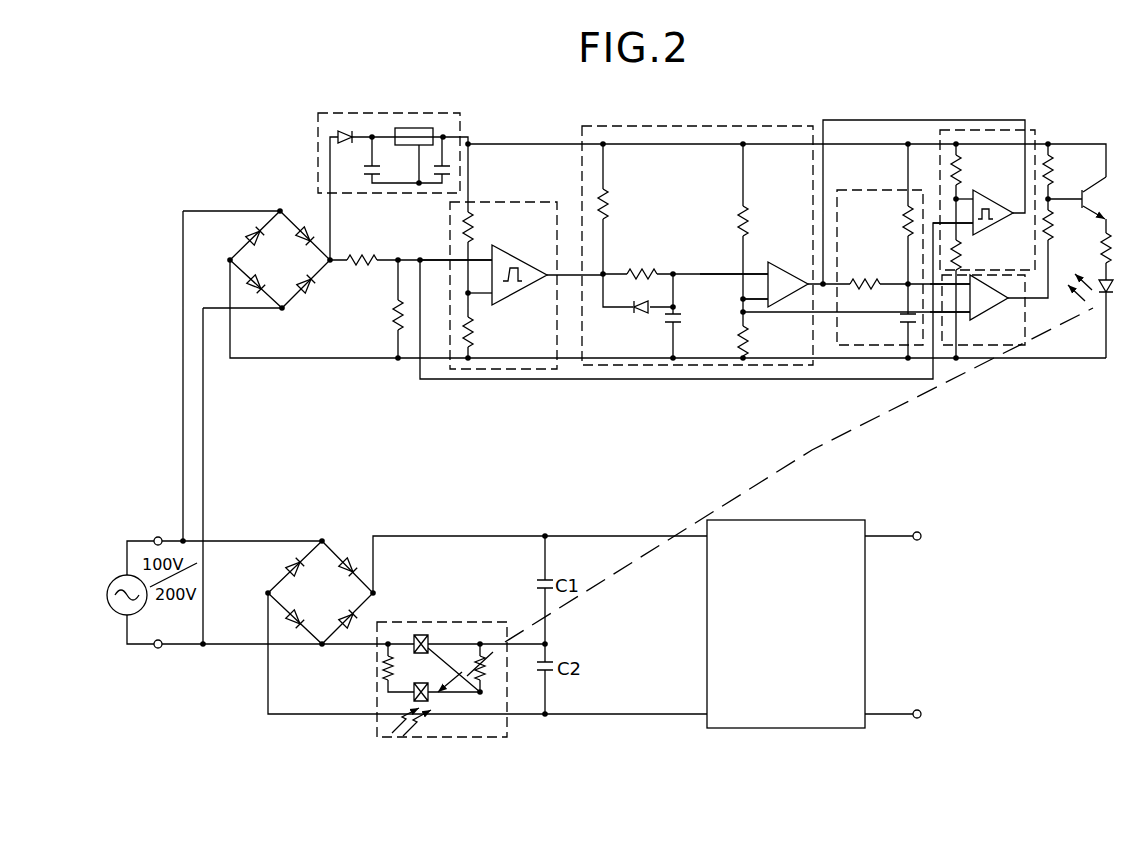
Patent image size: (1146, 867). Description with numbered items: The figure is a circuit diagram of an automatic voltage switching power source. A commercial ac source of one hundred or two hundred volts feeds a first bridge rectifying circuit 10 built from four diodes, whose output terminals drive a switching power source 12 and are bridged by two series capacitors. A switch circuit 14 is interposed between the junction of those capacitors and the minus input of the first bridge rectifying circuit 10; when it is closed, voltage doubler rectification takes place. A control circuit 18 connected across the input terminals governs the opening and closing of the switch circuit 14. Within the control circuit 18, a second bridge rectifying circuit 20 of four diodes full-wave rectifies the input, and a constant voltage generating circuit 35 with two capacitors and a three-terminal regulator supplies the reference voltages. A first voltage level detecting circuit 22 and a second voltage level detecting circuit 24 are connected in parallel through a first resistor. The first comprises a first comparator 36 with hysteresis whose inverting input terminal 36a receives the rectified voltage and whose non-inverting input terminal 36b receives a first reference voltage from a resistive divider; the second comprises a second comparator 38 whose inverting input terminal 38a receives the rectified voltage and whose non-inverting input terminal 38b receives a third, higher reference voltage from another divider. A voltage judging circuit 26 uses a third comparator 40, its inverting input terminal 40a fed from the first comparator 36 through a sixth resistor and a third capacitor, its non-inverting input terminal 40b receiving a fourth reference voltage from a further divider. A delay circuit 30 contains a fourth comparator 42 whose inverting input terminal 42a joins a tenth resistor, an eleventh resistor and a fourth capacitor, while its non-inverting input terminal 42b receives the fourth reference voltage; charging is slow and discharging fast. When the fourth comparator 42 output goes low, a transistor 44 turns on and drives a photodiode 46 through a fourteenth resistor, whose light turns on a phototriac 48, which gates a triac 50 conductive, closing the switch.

The first bridge rectifying circuit 10 is at (327, 538).
The switching power source 12 is at (780, 533).
The switch circuit 14 is at (447, 618).
The control circuit 18 is at (380, 380).
The second bridge rectifying circuit 20 is at (279, 207).
The first voltage level detecting circuit 22 is at (499, 199).
The second voltage level detecting circuit 24 is at (988, 128).
The voltage judging circuit 26 is at (711, 124).
The delay circuit 30 is at (868, 188).
The constant voltage generating circuit 35 is at (428, 120).
The first comparator 36 is at (520, 268).
The inverting input terminal 36a is at (487, 259).
The non-inverting input terminal 36b is at (487, 295).
The second comparator 38 is at (1000, 203).
The inverting input terminal 38a is at (972, 224).
The non-inverting input terminal 38b is at (972, 198).
The third comparator 40 is at (795, 275).
The inverting input terminal 40a is at (762, 273).
The non-inverting input terminal 40b is at (762, 300).
The fourth comparator 42 is at (990, 298).
The inverting input terminal 42a is at (966, 290).
The non-inverting input terminal 42b is at (972, 315).
The transistor 44 is at (1109, 228).
The photodiode 46 is at (1106, 316).
The phototriac 48 is at (388, 690).
The triac 50 is at (413, 635).